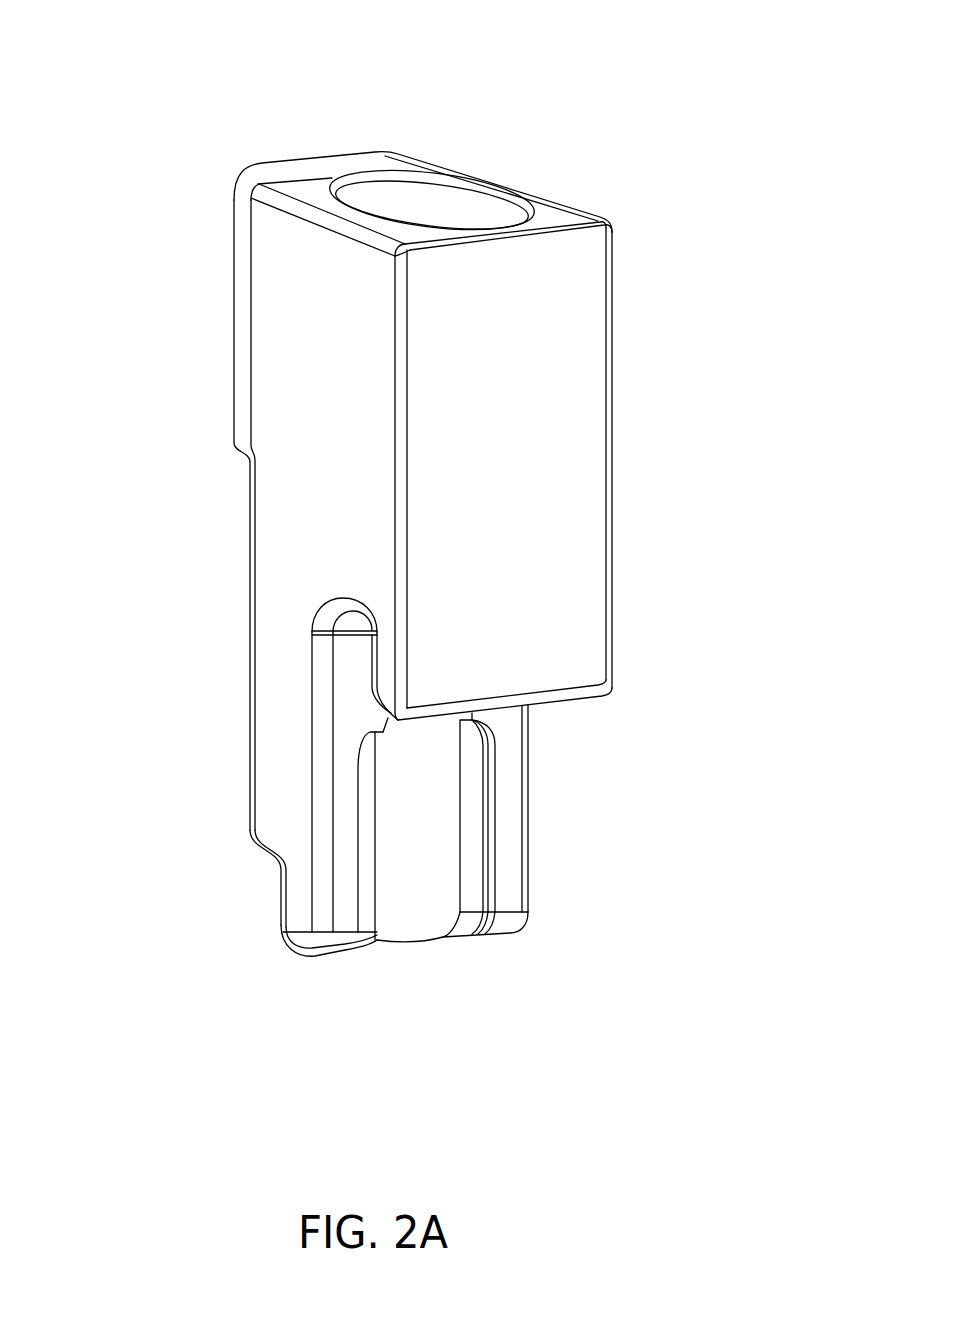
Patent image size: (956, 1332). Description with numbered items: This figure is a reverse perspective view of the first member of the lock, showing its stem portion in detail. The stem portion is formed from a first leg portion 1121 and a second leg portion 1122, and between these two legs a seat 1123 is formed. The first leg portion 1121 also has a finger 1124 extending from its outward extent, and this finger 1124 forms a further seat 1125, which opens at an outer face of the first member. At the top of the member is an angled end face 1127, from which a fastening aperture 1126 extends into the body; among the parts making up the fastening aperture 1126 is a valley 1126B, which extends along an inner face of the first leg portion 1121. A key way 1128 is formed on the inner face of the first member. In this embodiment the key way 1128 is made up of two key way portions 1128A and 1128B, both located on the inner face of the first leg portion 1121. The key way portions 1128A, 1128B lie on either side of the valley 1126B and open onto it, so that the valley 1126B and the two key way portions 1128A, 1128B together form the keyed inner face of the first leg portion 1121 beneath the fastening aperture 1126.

The first leg portion 1121 is at (302, 698).
The second leg portion 1122 is at (558, 657).
The seat 1123 is at (313, 631).
The finger 1124 is at (282, 932).
The seat 1125 is at (273, 862).
The fastening aperture 1126 is at (483, 207).
The valley 1126B is at (410, 917).
The angled end face 1127 is at (293, 180).
The key way 1128 is at (436, 916).
The key way portion 1128A is at (368, 808).
The key way portion 1128B is at (472, 790).